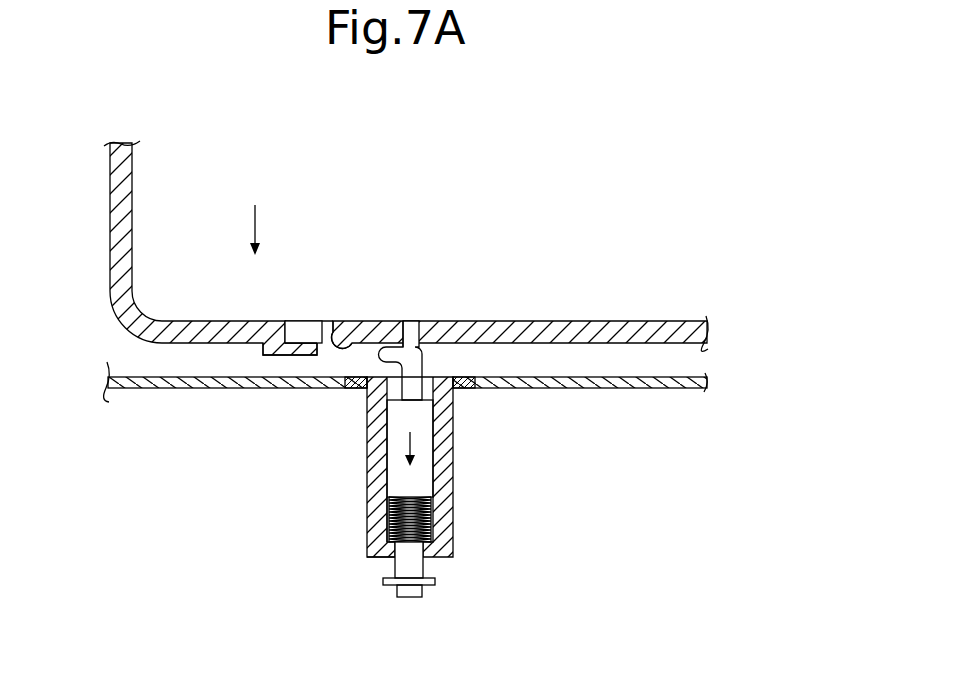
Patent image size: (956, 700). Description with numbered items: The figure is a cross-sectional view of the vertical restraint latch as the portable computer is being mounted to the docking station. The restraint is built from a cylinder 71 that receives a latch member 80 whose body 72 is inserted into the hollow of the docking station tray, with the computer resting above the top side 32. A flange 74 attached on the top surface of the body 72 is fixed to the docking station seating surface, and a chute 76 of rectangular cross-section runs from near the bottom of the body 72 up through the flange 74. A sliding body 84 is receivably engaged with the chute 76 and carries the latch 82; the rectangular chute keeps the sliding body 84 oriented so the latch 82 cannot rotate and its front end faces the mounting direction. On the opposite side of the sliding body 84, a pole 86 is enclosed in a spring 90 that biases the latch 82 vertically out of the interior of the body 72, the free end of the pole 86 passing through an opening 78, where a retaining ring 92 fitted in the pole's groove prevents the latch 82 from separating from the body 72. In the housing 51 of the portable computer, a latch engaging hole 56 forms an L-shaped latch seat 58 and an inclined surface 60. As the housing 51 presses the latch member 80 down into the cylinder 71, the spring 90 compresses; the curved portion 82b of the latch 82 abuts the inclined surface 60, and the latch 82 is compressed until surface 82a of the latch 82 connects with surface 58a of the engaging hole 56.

The top side 32 is at (638, 389).
The housing 51 is at (598, 332).
The latch engaging hole 56 is at (300, 332).
The latch seat 58 is at (283, 355).
The surface of engaging hole 58a is at (308, 338).
The inclined surface 60 is at (339, 323).
The cylinder 71 is at (350, 447).
The body 72 is at (450, 473).
The flange 74 is at (457, 380).
The chute 76 is at (386, 512).
The opening 78 is at (392, 551).
The latch member 80 is at (425, 349).
The latch 82 is at (406, 337).
The surface of latch 82a is at (350, 382).
The curved portion 82b is at (398, 346).
The sliding body 84 is at (426, 448).
The pole 86 is at (410, 565).
The spring 90 is at (432, 513).
The retaining ring 92 is at (430, 584).